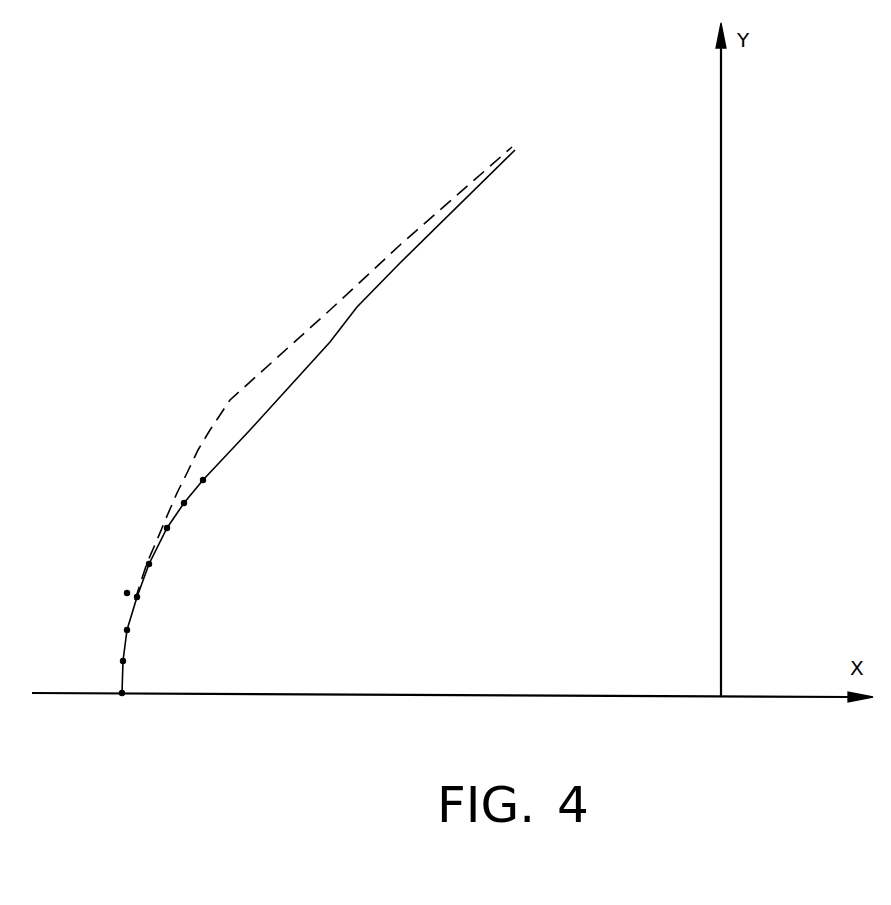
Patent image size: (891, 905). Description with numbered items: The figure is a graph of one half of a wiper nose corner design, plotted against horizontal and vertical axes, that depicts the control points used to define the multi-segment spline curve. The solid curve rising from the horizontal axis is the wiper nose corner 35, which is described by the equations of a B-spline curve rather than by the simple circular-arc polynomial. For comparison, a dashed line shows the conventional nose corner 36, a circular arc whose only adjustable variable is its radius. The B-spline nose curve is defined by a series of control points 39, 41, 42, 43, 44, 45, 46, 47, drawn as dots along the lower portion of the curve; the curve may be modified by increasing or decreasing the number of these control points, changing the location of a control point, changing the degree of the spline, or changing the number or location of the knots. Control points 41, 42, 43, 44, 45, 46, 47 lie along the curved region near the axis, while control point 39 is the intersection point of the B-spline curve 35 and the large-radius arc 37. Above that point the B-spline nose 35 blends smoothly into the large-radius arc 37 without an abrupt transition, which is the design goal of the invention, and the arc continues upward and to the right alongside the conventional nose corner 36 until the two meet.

The wiper nose corner 35 is at (162, 543).
The conventional nose corner 36 is at (230, 400).
The large-radius arc 37 is at (358, 310).
The control point 39 is at (205, 480).
The control point 41 is at (120, 688).
The control point 42 is at (122, 658).
The control point 43 is at (126, 627).
The control point 44 is at (136, 594).
The control point 45 is at (148, 561).
The control point 46 is at (166, 525).
The control point 47 is at (183, 500).